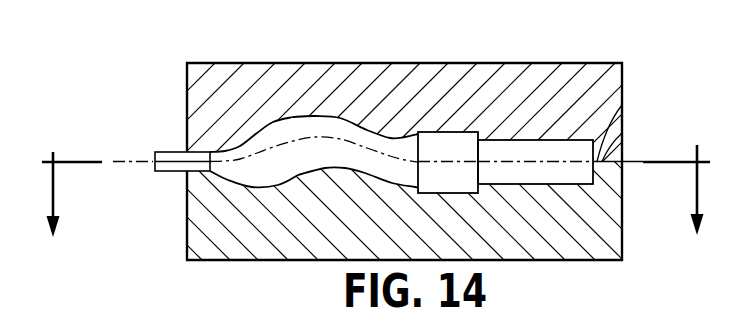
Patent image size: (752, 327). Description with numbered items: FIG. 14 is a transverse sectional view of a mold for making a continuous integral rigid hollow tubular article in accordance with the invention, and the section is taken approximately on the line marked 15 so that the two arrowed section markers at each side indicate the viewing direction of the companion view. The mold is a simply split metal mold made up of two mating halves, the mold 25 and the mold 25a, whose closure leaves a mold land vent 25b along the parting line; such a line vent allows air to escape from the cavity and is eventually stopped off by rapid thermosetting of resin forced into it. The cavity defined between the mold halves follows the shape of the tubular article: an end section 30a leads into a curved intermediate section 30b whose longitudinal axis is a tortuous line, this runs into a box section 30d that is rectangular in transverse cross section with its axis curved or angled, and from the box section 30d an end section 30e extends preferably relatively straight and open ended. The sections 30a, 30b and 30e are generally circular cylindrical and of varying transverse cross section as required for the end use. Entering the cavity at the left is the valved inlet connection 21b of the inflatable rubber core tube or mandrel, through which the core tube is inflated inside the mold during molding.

The split metal mold 25 is at (562, 245).
The split metal mold 25a is at (622, 105).
The mold land vent 25b is at (622, 133).
The valved inlet connection 21b is at (165, 172).
The end section 30a is at (249, 150).
The curved intermediate section 30b is at (323, 134).
The box section 30d is at (435, 150).
The end section 30e is at (568, 150).
The section line 15- 15 is at (378, 184).